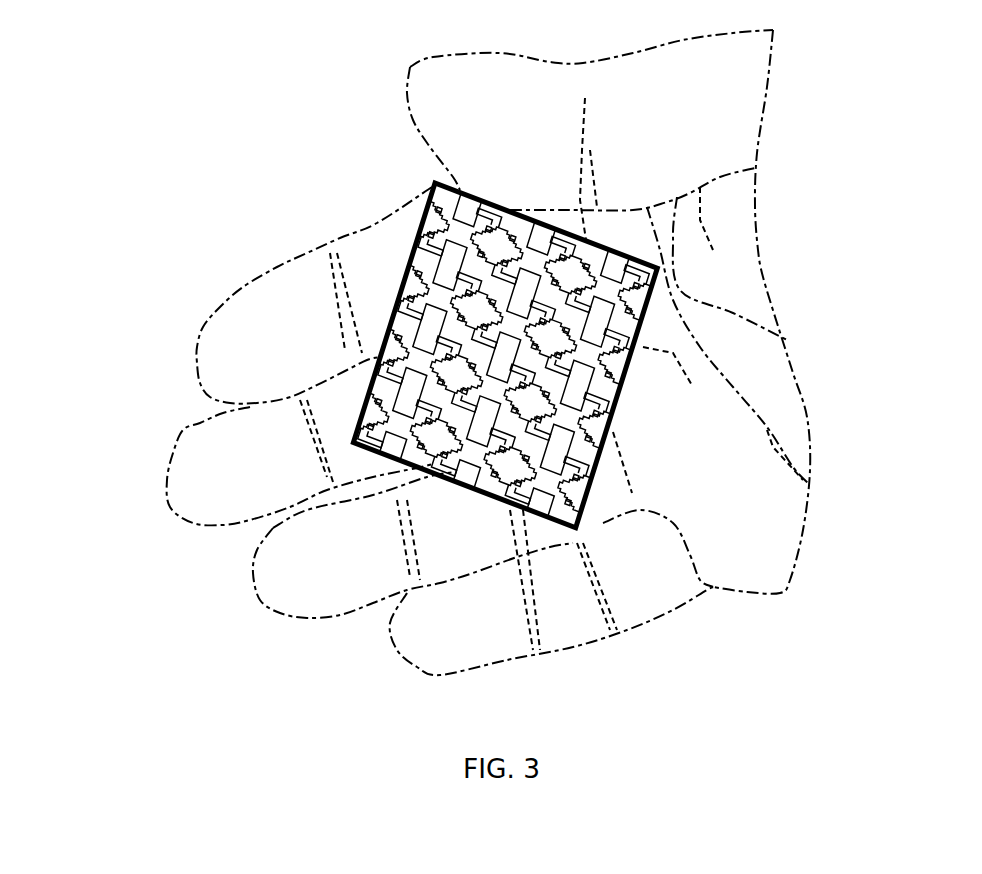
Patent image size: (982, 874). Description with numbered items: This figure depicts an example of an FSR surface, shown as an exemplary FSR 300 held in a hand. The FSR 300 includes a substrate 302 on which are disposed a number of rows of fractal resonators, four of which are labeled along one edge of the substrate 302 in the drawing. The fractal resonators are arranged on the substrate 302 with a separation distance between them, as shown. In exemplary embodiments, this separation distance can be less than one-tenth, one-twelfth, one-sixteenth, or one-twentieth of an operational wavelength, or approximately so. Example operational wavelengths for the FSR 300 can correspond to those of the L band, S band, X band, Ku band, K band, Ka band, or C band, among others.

The FSR 300 is at (128, 354).
The substrate 302 is at (578, 537).